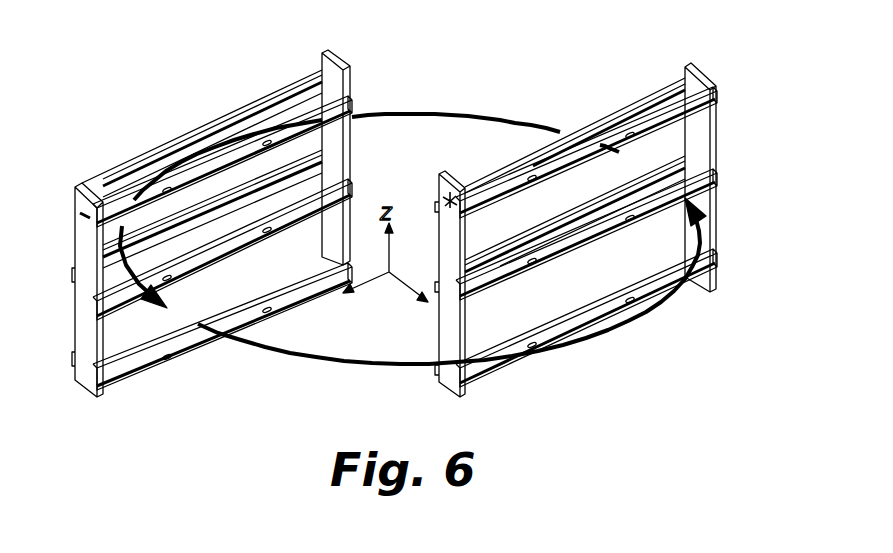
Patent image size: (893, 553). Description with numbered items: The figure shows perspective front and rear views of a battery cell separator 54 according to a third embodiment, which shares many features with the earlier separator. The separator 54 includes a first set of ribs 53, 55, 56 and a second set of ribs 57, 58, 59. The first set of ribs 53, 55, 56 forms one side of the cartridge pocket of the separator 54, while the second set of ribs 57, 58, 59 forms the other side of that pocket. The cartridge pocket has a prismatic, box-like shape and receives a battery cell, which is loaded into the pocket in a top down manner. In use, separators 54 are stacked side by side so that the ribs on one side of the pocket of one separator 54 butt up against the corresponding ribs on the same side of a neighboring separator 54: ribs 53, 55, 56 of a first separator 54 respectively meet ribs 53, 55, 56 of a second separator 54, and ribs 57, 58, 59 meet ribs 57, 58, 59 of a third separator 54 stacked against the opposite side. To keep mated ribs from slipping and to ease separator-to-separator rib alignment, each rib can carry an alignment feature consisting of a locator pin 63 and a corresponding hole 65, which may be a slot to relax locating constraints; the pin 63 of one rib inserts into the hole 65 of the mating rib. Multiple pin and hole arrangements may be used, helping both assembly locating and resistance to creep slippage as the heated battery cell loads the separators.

The rib 53 is at (194, 349).
The battery cell separator 54 is at (254, 86).
The rib 55 is at (346, 184).
The rib 56 is at (345, 99).
The rib 57 is at (118, 344).
The rib 58 is at (140, 252).
The rib 59 is at (198, 128).
The locator pin 63 is at (268, 313).
The hole 65 is at (171, 366).